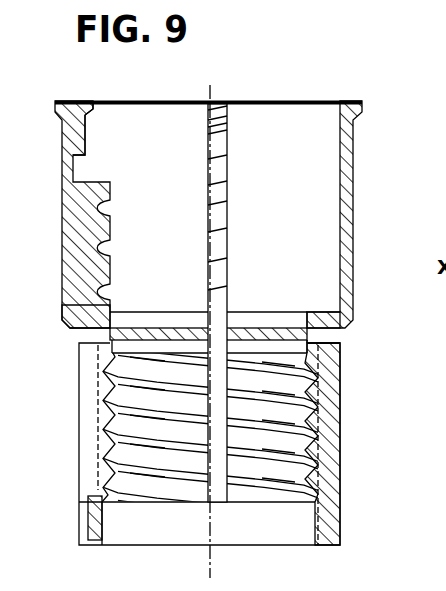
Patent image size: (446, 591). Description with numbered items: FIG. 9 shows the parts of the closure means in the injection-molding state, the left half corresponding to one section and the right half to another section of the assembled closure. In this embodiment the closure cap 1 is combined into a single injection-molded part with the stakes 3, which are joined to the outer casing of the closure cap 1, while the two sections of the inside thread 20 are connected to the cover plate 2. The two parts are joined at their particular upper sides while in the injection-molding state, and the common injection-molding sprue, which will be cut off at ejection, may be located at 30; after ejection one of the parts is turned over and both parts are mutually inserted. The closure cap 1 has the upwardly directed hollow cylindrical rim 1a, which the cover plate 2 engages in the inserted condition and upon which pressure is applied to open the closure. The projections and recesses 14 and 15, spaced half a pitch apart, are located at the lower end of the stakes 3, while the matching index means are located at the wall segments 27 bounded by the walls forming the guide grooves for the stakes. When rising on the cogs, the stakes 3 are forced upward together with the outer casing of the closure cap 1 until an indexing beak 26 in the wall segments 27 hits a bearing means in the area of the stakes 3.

The closure cap 1 is at (352, 203).
The hollow cylindrical rim 1a is at (70, 328).
The cover plate 2 is at (165, 330).
The stakes 3 is at (111, 214).
The projections or recesses 14 is at (132, 128).
The projections or recesses 15 is at (84, 118).
The inside thread 20 is at (214, 442).
The indexing beak 26 is at (88, 494).
The wall segments 27 is at (104, 520).
The location of injection-molding sprue 30 is at (307, 336).